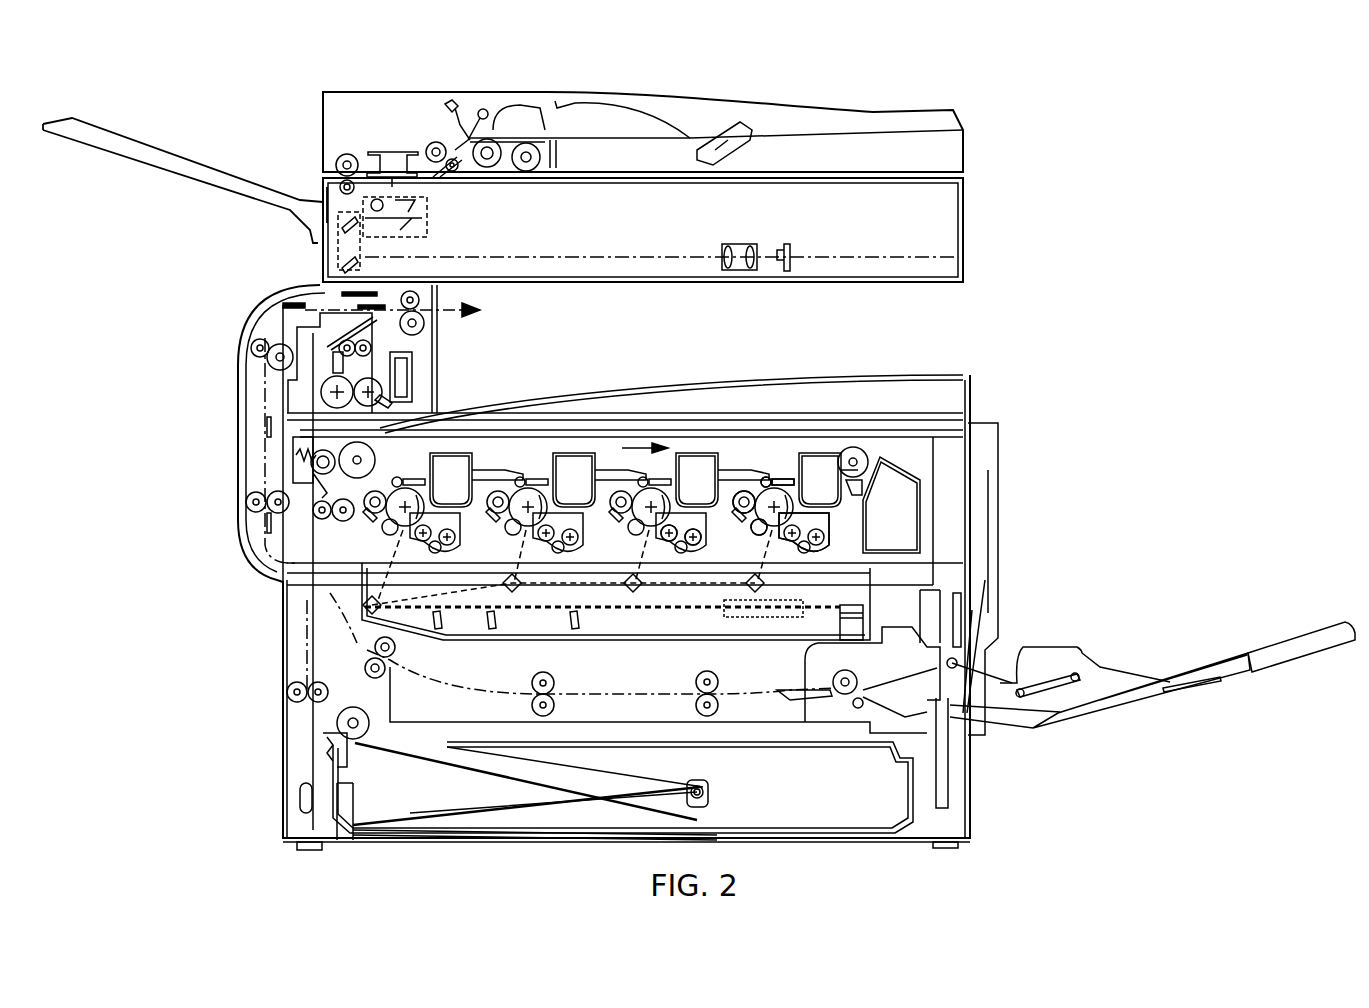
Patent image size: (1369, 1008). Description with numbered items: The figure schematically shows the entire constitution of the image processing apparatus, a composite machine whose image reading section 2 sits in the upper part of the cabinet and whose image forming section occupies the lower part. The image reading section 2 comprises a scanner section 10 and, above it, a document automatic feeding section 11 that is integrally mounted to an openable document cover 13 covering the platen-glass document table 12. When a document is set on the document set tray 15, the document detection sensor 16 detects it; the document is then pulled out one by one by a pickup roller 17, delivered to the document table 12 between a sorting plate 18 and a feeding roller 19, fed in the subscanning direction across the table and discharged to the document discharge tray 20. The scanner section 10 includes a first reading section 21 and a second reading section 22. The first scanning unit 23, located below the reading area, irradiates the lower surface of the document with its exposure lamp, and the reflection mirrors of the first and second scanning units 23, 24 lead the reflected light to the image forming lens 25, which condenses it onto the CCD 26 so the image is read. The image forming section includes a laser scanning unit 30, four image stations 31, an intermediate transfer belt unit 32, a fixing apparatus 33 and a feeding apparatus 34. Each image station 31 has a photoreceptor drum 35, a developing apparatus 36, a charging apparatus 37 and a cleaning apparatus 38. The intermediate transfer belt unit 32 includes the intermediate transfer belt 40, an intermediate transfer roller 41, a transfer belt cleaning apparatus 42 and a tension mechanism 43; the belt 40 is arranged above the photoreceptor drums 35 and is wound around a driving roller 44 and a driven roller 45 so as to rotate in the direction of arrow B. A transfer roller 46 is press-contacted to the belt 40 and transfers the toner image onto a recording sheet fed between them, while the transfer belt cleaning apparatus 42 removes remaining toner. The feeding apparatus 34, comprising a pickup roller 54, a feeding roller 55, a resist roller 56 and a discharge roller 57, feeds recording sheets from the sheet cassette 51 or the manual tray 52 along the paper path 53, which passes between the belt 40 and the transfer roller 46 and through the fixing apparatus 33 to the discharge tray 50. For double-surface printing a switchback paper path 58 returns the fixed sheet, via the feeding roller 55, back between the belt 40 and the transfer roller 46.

The image reading section 2 is at (1038, 188).
The scanner section 10 is at (926, 285).
The document automatic feeding section 11 is at (952, 142).
The document table 12 is at (868, 185).
The document cover 13 is at (322, 118).
The document set tray 15 is at (577, 102).
The document detection sensor 16 is at (742, 124).
The pickup roller 17 is at (525, 163).
The sorting plate 18 is at (458, 140).
The feeding roller 19 is at (485, 163).
The document discharge tray 20 is at (130, 145).
The first reading section 21 is at (940, 252).
The second reading section 22 is at (388, 158).
The first scanning unit 23 is at (661, 246).
The second scanning unit 24 is at (342, 250).
The image forming lens 25 is at (740, 257).
The CCD 26 is at (790, 253).
The laser scanning unit 30 is at (690, 624).
The image station 31 is at (465, 445).
The intermediate transfer belt unit 32 is at (874, 446).
The fixing apparatus 33 is at (330, 398).
The feeding apparatus 34 is at (300, 612).
The photoreceptor drum 35 is at (537, 500).
The developing apparatus 36 is at (813, 548).
The charging apparatus 37 is at (640, 523).
The cleaning apparatus 38 is at (747, 523).
The intermediate transfer belt 40 is at (700, 430).
The intermediate transfer roller 41 is at (763, 477).
The transfer belt cleaning apparatus 42 is at (893, 480).
The tension mechanism 43 is at (493, 457).
The driving roller 44 is at (370, 458).
The driven roller 45 is at (852, 448).
The transfer roller 46 is at (313, 487).
The discharge tray 50 is at (470, 420).
The sheet cassette 51 is at (420, 780).
The manual tray 52 is at (1123, 673).
The paper path 53 is at (635, 663).
The pickup roller 54 is at (370, 727).
The feeding roller 55 is at (257, 513).
The resist roller 56 is at (342, 522).
The discharge roller 57 is at (423, 290).
The switchback paper path 58 is at (268, 460).